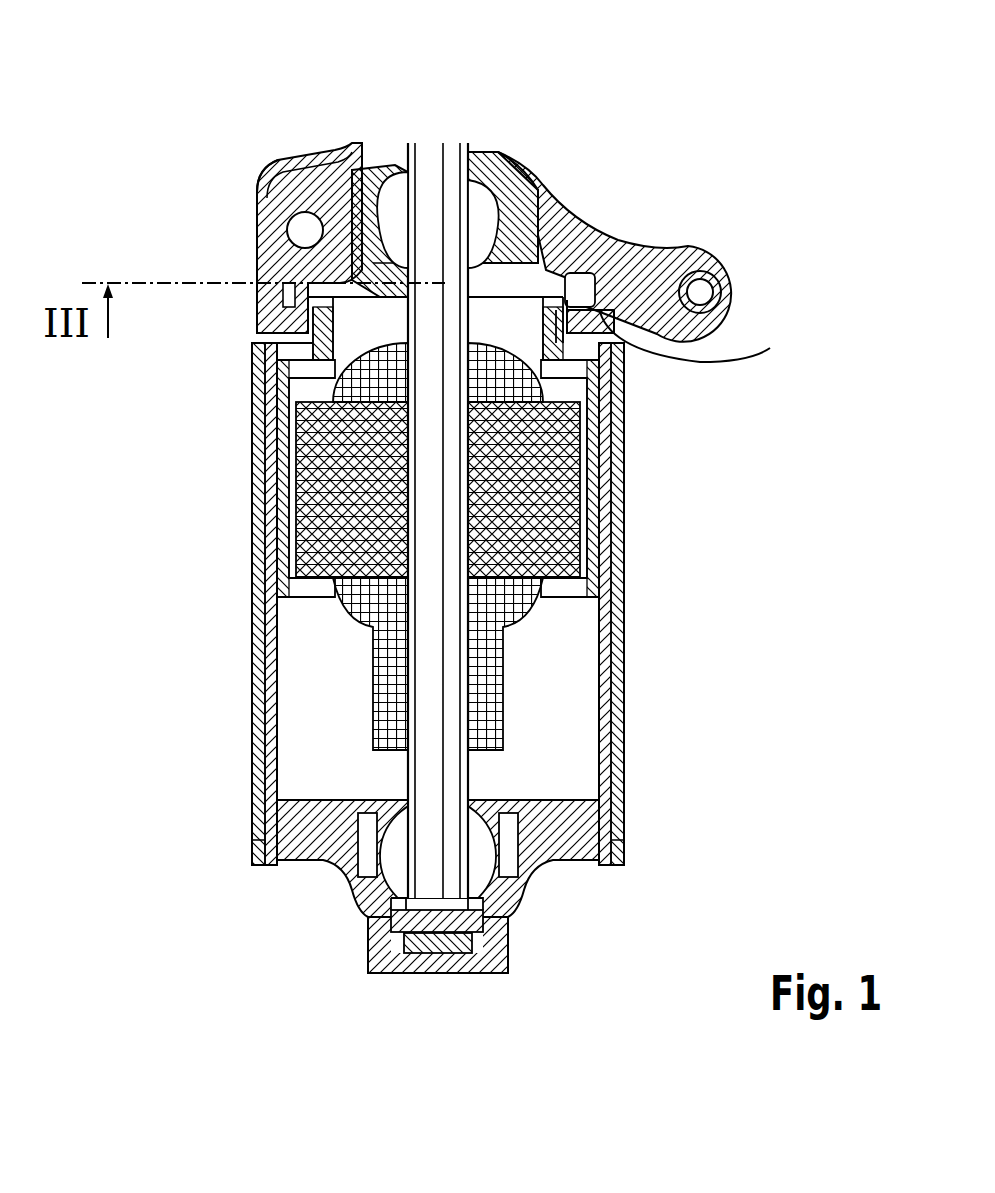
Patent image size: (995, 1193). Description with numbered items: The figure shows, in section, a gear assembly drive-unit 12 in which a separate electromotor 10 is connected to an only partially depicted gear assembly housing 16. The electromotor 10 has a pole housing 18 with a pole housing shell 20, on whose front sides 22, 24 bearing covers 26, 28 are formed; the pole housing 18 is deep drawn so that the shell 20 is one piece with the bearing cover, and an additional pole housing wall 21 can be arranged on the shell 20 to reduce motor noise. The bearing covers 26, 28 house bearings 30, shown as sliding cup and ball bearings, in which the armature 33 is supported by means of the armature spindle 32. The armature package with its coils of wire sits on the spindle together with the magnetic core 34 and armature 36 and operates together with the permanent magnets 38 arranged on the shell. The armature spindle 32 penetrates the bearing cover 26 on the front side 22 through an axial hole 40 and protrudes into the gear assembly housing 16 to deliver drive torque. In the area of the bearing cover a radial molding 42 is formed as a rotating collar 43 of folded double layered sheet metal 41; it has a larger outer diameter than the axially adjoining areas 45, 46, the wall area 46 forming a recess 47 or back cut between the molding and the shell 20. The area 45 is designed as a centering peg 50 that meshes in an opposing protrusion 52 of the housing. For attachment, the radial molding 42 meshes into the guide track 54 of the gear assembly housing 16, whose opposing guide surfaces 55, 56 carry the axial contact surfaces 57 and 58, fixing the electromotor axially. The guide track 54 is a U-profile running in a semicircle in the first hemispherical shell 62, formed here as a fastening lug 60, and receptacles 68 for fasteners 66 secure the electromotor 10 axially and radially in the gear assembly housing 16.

The electromotor 10 is at (690, 600).
The gear assembly drive-unit 12 is at (824, 430).
The gear assembly housing 16 is at (243, 169).
The pole housing 18 is at (240, 530).
The pole housing shell 20 is at (612, 455).
The magnetic return wall 21 is at (618, 560).
The front side 22 is at (624, 346).
The front side 24 is at (275, 884).
The bearing cover 26 is at (677, 227).
The bearing cover 28 is at (575, 833).
The bearings 30 is at (478, 880).
The armature spindle 32 is at (453, 740).
The armature 33 is at (333, 627).
The magnetic core 34 is at (553, 540).
The armature 36 is at (520, 604).
The permanent magnets 38 is at (600, 505).
The hole 40 is at (482, 153).
The folded double layered sheet metal 41 is at (202, 350).
The radial molding 42 is at (202, 350).
The rotating collar 43 is at (256, 322).
The centering peg area 45 is at (243, 206).
The wall area 46 is at (204, 389).
The recess 47 is at (298, 350).
The centering peg 50 is at (243, 206).
The opposing protrusion 52 is at (302, 226).
The guide track 54 is at (677, 228).
The guide surface 55 is at (578, 242).
The guide surface 56 is at (717, 356).
The axial contact surface 57 is at (600, 272).
The axial contact surface 58 is at (771, 232).
The fastening lug 60 is at (677, 228).
The first hemispherical shell 62 is at (243, 169).
The fasteners 66 is at (708, 250).
The receptacles 68 is at (273, 183).